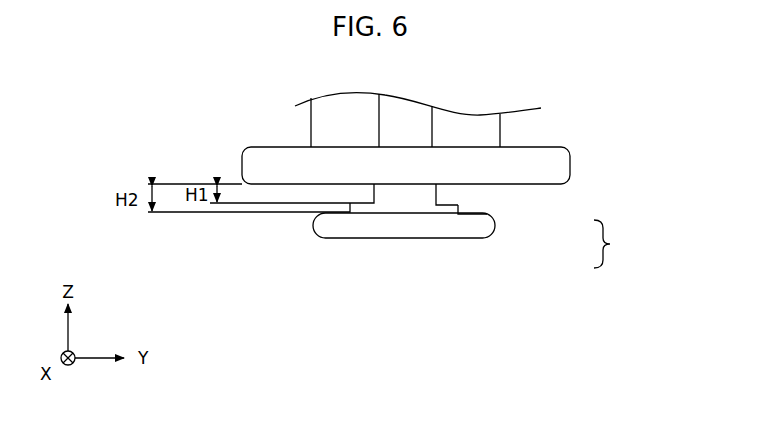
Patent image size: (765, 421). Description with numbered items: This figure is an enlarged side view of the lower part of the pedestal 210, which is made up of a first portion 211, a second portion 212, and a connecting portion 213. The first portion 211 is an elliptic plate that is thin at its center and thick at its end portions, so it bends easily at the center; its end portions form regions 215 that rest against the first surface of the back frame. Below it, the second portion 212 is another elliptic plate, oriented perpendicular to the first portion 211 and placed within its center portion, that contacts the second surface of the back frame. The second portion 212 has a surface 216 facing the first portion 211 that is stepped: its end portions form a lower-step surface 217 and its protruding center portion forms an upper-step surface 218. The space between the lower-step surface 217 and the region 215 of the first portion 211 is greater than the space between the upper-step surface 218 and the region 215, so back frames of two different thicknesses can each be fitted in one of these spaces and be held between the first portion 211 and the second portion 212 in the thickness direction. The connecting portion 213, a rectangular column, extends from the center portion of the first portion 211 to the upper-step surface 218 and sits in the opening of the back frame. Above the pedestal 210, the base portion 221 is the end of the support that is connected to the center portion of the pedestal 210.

The pedestal 210 is at (468, 255).
The first portion 211 is at (250, 162).
The second portion 212 is at (413, 230).
The connecting portion 213 is at (428, 195).
The region 215 is at (545, 184).
The surface 216 is at (623, 244).
The lower-step surface 217 is at (475, 214).
The upper-step surface 218 is at (445, 204).
The base portion 221 is at (325, 124).